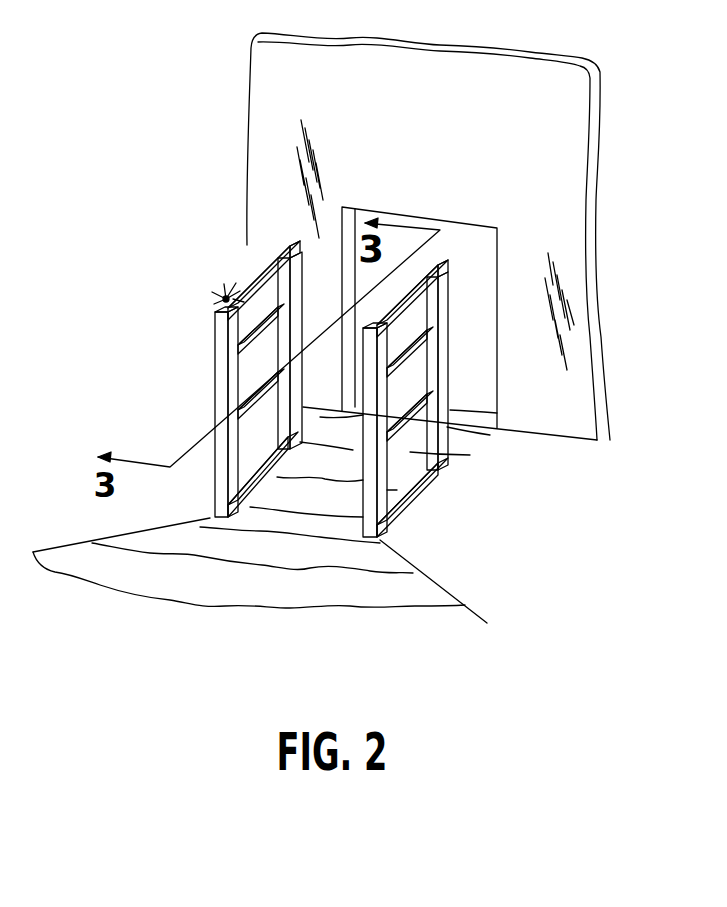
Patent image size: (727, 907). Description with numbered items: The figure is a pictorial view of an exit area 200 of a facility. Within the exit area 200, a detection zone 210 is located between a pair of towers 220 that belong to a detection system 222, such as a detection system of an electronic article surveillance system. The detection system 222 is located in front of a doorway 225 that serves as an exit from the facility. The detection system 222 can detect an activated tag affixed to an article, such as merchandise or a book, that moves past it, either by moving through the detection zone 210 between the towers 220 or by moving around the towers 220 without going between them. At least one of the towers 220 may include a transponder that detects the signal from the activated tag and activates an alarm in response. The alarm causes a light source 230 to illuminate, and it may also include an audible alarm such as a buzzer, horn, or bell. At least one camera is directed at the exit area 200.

The exit area 200 is at (195, 185).
The detection zone 210 is at (330, 485).
The towers 220 is at (213, 340).
The detection system 222 is at (458, 467).
The doorway 225 is at (478, 243).
The light source 230 is at (213, 297).